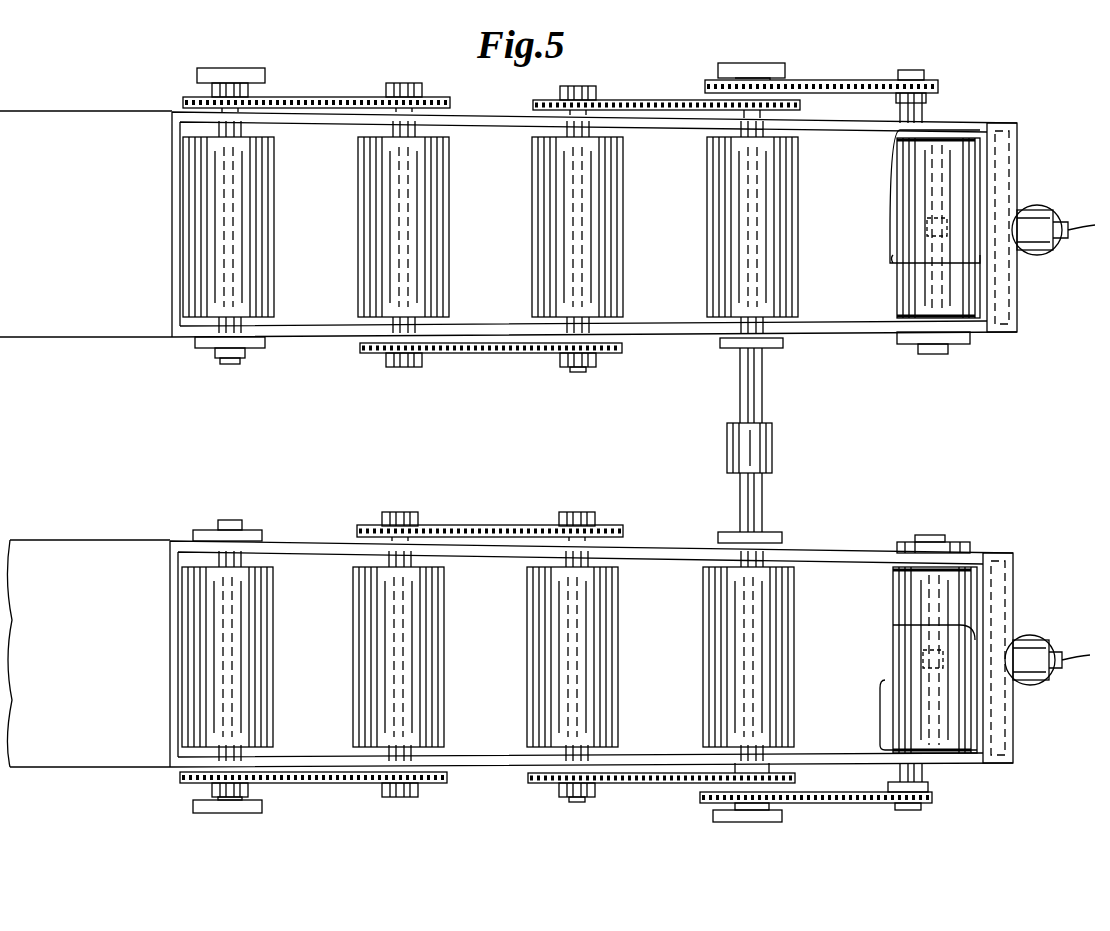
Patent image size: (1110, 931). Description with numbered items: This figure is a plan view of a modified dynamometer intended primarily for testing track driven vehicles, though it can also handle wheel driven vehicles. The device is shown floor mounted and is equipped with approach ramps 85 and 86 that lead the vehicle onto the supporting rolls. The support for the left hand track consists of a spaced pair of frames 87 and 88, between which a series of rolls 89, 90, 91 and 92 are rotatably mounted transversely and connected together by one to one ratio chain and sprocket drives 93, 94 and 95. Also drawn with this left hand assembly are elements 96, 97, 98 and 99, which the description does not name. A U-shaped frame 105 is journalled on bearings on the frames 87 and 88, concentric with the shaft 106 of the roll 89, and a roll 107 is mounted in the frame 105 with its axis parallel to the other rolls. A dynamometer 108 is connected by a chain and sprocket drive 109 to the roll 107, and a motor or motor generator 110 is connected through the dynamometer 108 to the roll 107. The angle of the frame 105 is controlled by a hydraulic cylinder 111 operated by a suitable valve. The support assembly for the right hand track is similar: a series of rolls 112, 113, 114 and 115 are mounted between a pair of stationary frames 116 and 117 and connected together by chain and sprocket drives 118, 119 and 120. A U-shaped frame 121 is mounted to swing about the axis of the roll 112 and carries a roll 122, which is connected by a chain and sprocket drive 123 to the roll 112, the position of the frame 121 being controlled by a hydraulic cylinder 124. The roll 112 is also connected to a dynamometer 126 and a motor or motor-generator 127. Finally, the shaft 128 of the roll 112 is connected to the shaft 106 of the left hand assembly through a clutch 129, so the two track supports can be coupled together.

The approach ramp 85 is at (118, 318).
The approach ramp 86 is at (90, 550).
The frame 87 is at (488, 116).
The frame 88 is at (668, 333).
The roll 89 is at (715, 276).
The roll 90 is at (537, 274).
The roll 91 is at (372, 262).
The roll 92 is at (185, 243).
The chain and sprocket drive 93 is at (652, 100).
The chain and sprocket drive 94 is at (497, 356).
The chain and sprocket drive 95 is at (318, 97).
The sprocket 96 is at (750, 66).
The sprocket 97 is at (730, 350).
The sprocket 98 is at (240, 72).
The sprocket 99 is at (213, 355).
The U-shaped frame 105 is at (1003, 302).
The shaft 106 is at (760, 391).
The roll 107 is at (905, 290).
The dynamometer 108 is at (898, 210).
The chain and sprocket drive 109 is at (838, 80).
The motor or motor generator 110 is at (965, 345).
The hydraulic cylinder 111 is at (1045, 252).
The roll 112 is at (775, 648).
The roll 113 is at (600, 668).
The roll 114 is at (430, 676).
The roll 115 is at (250, 648).
The stationary frame 116 is at (305, 548).
The stationary frame 117 is at (305, 763).
The chain and sprocket drive 118 is at (655, 785).
The chain and sprocket drive 119 is at (483, 525).
The chain and sprocket drive 120 is at (322, 793).
The U-shaped frame 121 is at (950, 755).
The roll 122 is at (905, 660).
The chain and sprocket drive 123 is at (845, 810).
The hydraulic cylinder 124 is at (1045, 642).
The dynamometer 126 is at (888, 712).
The motor or motor-generator 127 is at (960, 545).
The shaft 128 is at (758, 503).
The clutch 129 is at (762, 448).